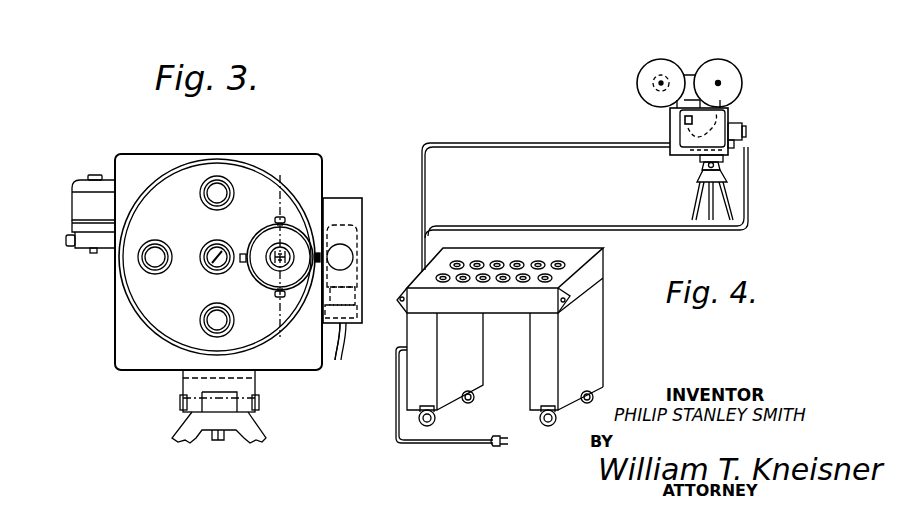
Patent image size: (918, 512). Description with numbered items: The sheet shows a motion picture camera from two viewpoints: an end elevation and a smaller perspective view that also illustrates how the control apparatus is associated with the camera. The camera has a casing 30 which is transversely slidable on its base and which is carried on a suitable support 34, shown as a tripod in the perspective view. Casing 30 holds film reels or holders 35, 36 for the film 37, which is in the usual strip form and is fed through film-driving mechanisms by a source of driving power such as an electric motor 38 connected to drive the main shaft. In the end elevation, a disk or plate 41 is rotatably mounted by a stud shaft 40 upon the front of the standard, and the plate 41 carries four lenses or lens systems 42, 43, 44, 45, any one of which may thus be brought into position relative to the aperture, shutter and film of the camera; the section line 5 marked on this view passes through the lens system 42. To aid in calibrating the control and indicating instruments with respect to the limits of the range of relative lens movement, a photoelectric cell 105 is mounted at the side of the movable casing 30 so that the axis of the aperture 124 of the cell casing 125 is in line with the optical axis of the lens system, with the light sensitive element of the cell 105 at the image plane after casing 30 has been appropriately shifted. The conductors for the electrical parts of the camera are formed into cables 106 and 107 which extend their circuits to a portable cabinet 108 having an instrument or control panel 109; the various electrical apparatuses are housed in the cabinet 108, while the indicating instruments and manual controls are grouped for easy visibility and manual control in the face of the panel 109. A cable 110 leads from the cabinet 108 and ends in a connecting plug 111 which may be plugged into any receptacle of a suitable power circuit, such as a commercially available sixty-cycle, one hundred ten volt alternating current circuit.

In FIG. 3, the section line 5 is at (266, 209).
In FIG. 4, the casing 30 is at (672, 128).
In FIG. 3, the support 34 is at (257, 428).
In FIG. 4, the support 34 is at (692, 201).
In FIG. 4, the film reel 35 is at (720, 66).
In FIG. 4, the film reel 36 is at (664, 66).
In FIG. 4, the film 37 is at (672, 116).
In FIG. 3, the electric motor 38 is at (72, 205).
In FIG. 4, the electric motor 38 is at (687, 124).
In FIG. 3, the stud shaft 40 is at (208, 266).
In FIG. 3, the disk or plate 41 is at (258, 182).
In FIG. 3, the lens system 42 is at (250, 239).
In FIG. 4, the lens system 42 is at (743, 126).
In FIG. 3, the lens system 43 is at (199, 196).
In FIG. 3, the lens system 44 is at (160, 272).
In FIG. 3, the lens system 45 is at (201, 323).
In FIG. 3, the photoelectric cell 105 is at (345, 258).
In FIG. 4, the cable 106 is at (490, 143).
In FIG. 4, the cable 107 is at (505, 228).
In FIG. 4, the portable cabinet 108 is at (597, 337).
In FIG. 4, the control panel 109 is at (574, 265).
In FIG. 4, the cable 110 is at (396, 405).
In FIG. 4, the connecting plug 111 is at (495, 448).
In FIG. 3, the aperture 124 is at (340, 252).
In FIG. 3, the cell casing 125 is at (335, 205).